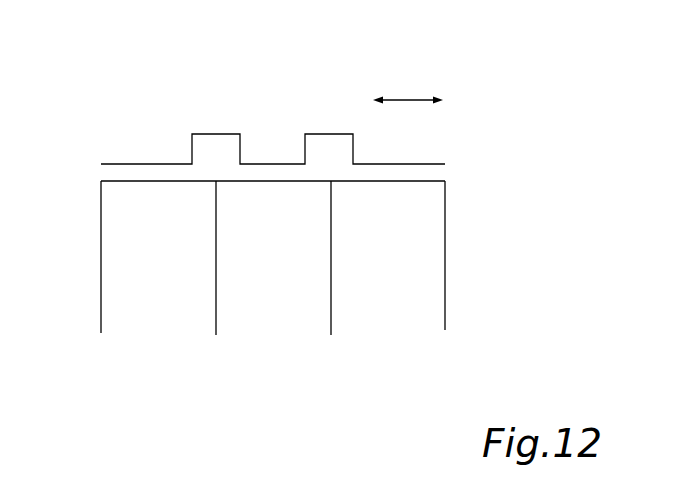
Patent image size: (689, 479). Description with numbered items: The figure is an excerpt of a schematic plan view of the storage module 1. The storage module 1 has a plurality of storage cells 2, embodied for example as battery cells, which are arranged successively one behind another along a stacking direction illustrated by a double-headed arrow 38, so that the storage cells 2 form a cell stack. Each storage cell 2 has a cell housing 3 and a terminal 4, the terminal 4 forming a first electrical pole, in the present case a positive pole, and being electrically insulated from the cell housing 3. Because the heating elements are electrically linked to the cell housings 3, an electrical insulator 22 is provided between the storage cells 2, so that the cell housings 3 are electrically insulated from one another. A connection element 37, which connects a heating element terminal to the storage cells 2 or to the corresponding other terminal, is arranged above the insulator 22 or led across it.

The storage module 1 is at (478, 151).
The storage cell 2 is at (135, 333).
The cell housing 3 is at (101, 262).
The terminal 4 is at (452, 202).
The electrical insulator 22 is at (331, 238).
The connection element 37 is at (215, 134).
The double-headed arrow 38 is at (405, 100).